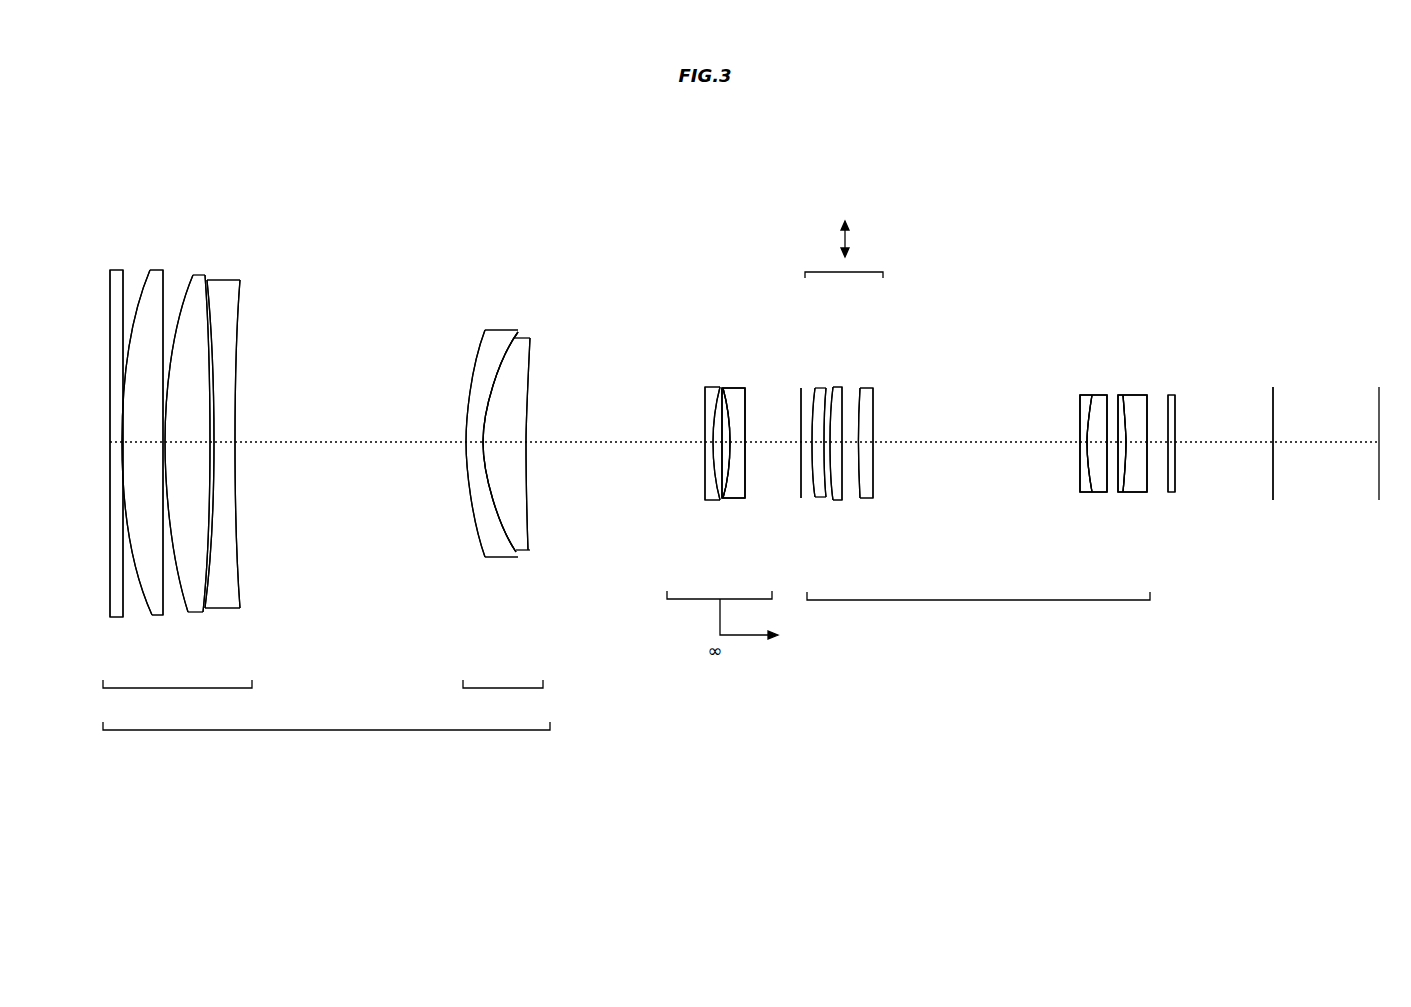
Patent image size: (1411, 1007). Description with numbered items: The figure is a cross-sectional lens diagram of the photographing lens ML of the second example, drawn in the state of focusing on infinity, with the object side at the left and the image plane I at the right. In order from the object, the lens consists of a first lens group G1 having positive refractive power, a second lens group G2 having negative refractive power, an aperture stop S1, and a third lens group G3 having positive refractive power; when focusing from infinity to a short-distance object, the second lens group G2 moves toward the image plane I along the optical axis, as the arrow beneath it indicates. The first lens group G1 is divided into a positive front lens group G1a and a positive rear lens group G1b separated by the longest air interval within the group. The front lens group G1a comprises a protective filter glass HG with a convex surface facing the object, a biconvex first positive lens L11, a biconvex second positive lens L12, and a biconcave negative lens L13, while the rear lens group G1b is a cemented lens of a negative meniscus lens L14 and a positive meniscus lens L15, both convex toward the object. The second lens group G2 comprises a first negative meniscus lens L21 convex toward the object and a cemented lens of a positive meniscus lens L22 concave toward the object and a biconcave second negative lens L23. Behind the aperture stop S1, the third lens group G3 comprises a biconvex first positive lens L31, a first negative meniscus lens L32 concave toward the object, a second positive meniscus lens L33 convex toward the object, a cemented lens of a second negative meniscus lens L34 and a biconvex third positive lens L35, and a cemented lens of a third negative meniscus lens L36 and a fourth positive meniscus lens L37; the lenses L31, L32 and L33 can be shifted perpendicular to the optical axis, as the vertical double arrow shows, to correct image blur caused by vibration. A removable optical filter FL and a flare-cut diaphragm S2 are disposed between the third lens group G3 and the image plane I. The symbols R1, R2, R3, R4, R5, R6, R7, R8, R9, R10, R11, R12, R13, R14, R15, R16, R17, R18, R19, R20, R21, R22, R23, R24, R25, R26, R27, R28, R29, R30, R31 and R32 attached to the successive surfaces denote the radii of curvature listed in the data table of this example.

The photographing lens ML is at (690, 182).
The protective filter glass HG is at (117, 617).
The first positive lens L11 is at (157, 615).
The second positive lens L12 is at (192, 612).
The negative lens L13 is at (220, 608).
The negative lens L14 is at (500, 557).
The positive lens L15 is at (527, 550).
The first negative lens L21 is at (713, 500).
The positive lens L22 is at (725, 500).
The second negative lens L23 is at (737, 500).
The first positive lens L31 is at (820, 498).
The first negative lens L32 is at (836, 500).
The second positive lens L33 is at (868, 498).
The second negative lens L34 is at (1085, 492).
The third positive lens L35 is at (1100, 492).
The third negative lens L36 is at (1130, 492).
The fourth positive lens L37 is at (1145, 492).
The first lens group G1 is at (326, 741).
The front lens group G1a is at (177, 698).
The rear lens group G1b is at (503, 698).
The second lens group G2 is at (719, 610).
The third lens group G3 is at (978, 611).
The aperture stop S1 is at (797, 498).
The flare-cut diaphragm S2 is at (1273, 488).
The removable optical filter FL is at (1175, 492).
The image plane I is at (1381, 398).
The radius of curvature of surface 1 R1 is at (110, 272).
The radius of curvature of surface 2 R2 is at (123, 286).
The radius of curvature of surface 3 R3 is at (142, 280).
The radius of curvature of surface 4 R4 is at (163, 282).
The radius of curvature of surface 5 R5 is at (181, 282).
The radius of curvature of surface 6 R6 is at (204, 280).
The radius of curvature of surface 7 R7 is at (206, 298).
The radius of curvature of surface 8 R8 is at (243, 297).
The radius of curvature of surface 9 R9 is at (477, 352).
The radius of curvature of surface 10 R10 is at (502, 352).
The radius of curvature of surface 11 R11 is at (530, 363).
The radius of curvature of surface 12 R12 is at (702, 400).
The radius of curvature of surface 13 R13 is at (702, 390).
The radius of curvature of surface 14 R14 is at (720, 388).
The radius of curvature of surface 15 R15 is at (721, 387).
The radius of curvature of surface 16 R16 is at (752, 397).
The radius of curvature of surface 17 R17 is at (800, 388).
The radius of curvature of surface 18 R18 is at (814, 400).
The radius of curvature of surface 19 R19 is at (826, 388).
The radius of curvature of surface 20 R20 is at (831, 387).
The radius of curvature of surface 21 R21 is at (843, 388).
The radius of curvature of surface 22 R22 is at (859, 390).
The radius of curvature of surface 23 R23 is at (875, 390).
The radius of curvature of surface 24 R24 is at (1078, 405).
The radius of curvature of surface 25 R25 is at (1083, 397).
The radius of curvature of surface 26 R26 is at (1108, 403).
The radius of curvature of surface 27 R27 is at (1119, 402).
The radius of curvature of surface 28 R28 is at (1122, 405).
The radius of curvature of surface 29 R29 is at (1149, 407).
The radius of curvature of surface 30 R30 is at (1166, 402).
The radius of curvature of surface 31 R31 is at (1176, 410).
The radius of curvature of surface 32 R32 is at (1275, 397).